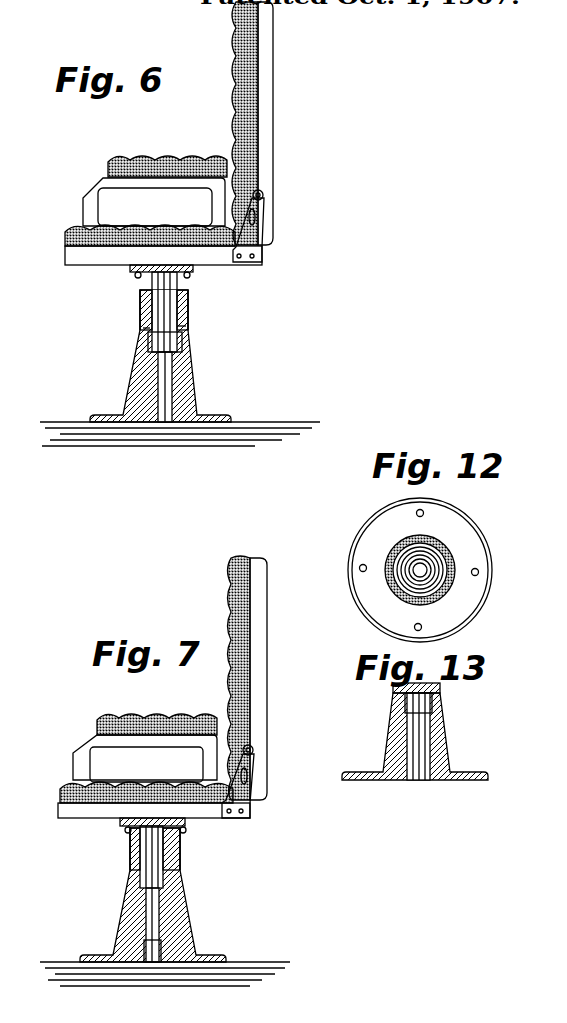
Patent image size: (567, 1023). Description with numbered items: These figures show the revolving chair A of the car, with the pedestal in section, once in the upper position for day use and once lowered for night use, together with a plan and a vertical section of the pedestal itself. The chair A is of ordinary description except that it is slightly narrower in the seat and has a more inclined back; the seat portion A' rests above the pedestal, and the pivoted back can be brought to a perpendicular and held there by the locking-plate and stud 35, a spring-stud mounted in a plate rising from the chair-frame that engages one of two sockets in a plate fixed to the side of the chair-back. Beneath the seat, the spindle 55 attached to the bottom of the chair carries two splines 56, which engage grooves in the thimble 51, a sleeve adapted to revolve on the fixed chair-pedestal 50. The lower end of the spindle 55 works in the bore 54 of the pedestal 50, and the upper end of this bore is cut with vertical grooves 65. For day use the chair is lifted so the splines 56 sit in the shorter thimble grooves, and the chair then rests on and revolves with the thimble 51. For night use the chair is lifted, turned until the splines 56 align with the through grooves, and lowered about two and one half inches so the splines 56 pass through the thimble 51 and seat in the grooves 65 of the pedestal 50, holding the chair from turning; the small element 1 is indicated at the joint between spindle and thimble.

In FIG. 6, the chair A is at (265, 123).
In FIG. 7, the chair A is at (260, 678).
In FIG. 6, the seat A' is at (150, 201).
In FIG. 7, the seat A' is at (146, 758).
In FIG. 6, the locking-plate and stud 35 is at (258, 218).
In FIG. 7, the locking-plate and stud 35 is at (249, 777).
In FIG. 6, the chair-pedestal 50 is at (190, 381).
In FIG. 7, the chair-pedestal 50 is at (182, 890).
In FIG. 13, the chair-pedestal 50 is at (442, 716).
In FIG. 6, the thimble 51 is at (190, 311).
In FIG. 7, the thimble 51 is at (181, 862).
In FIG. 6, the bore 54 is at (166, 401).
In FIG. 7, the bore 54 is at (160, 947).
In FIG. 13, the bore 54 is at (426, 736).
In FIG. 6, the spindle 55 is at (152, 279).
In FIG. 7, the spindle 55 is at (140, 856).
In FIG. 6, the splines 56 is at (150, 298).
In FIG. 7, the splines 56 is at (140, 840).
In FIG. 6, the pin 1 is at (140, 328).
In FIG. 6, the vertical grooves 65 is at (178, 345).
In FIG. 13, the vertical grooves 65 is at (428, 703).